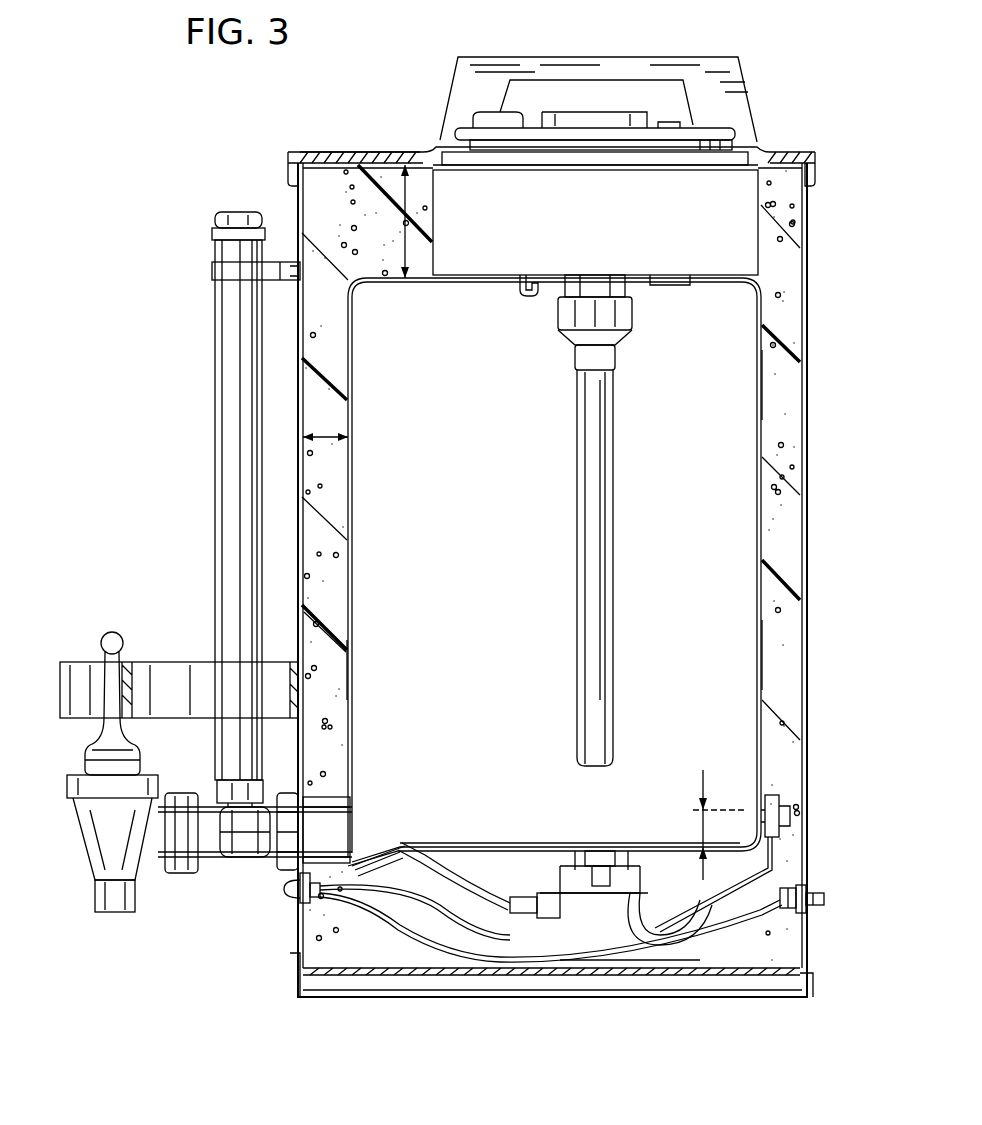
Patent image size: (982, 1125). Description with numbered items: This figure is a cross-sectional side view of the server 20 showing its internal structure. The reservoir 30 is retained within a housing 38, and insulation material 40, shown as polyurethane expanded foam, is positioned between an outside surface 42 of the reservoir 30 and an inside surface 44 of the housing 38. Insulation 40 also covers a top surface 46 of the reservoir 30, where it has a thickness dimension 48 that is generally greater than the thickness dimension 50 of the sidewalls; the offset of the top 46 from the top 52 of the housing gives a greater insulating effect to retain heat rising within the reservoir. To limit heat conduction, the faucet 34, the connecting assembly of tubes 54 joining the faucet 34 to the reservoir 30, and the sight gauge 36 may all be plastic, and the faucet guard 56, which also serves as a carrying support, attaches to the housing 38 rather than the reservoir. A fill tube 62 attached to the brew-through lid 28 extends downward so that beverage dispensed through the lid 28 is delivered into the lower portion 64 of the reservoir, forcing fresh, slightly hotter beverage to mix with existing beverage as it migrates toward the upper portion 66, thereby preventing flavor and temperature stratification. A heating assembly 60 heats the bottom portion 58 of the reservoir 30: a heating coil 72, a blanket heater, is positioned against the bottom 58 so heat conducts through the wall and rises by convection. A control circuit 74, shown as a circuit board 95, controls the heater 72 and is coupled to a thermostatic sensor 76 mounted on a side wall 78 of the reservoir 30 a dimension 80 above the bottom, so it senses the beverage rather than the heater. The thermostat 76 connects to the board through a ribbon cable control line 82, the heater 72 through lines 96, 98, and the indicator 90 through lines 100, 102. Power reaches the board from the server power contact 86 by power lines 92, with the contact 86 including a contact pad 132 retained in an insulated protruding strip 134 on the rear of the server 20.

The server 20 is at (212, 183).
The brew-through lid 28 is at (453, 137).
The reservoir 30 is at (346, 490).
The faucet 34 is at (128, 862).
The sight gauge 36 is at (233, 385).
The housing 38 is at (298, 428).
The insulation material 40 is at (330, 610).
The outside surface of the reservoir 42 is at (346, 668).
The inside surface of the housing 44 is at (312, 543).
The top surface of the reservoir 46 is at (375, 280).
The thickness dimension 48 is at (420, 233).
The thickness dimension of the sidewalls 50 is at (325, 437).
The top of the housing 52 is at (350, 162).
The connecting assembly of tubes 54 is at (243, 858).
The faucet guard 56 is at (80, 662).
The bottom portion of the reservoir 58 is at (478, 858).
The heating assembly 60 is at (652, 910).
The fill tube 62 is at (590, 472).
The lower portion of the reservoir 64 is at (740, 658).
The upper portion of the reservoir 66 is at (733, 388).
The heating coil 72 is at (452, 855).
The control circuit 74 is at (615, 905).
The thermostatic sensor 76 is at (772, 787).
The side wall of the reservoir 78 is at (768, 712).
The dimension 80 is at (707, 827).
The control line 82 is at (707, 898).
The server power contact 86 is at (818, 866).
The indicator 90 is at (292, 897).
The power line 92 is at (727, 950).
The circuit board 95 is at (668, 888).
The line 96 is at (425, 865).
The line 98 is at (378, 856).
The line 100 is at (370, 912).
The line 102 is at (402, 913).
The contact pad 132 is at (823, 897).
The insulated protruding strip 134 is at (809, 883).